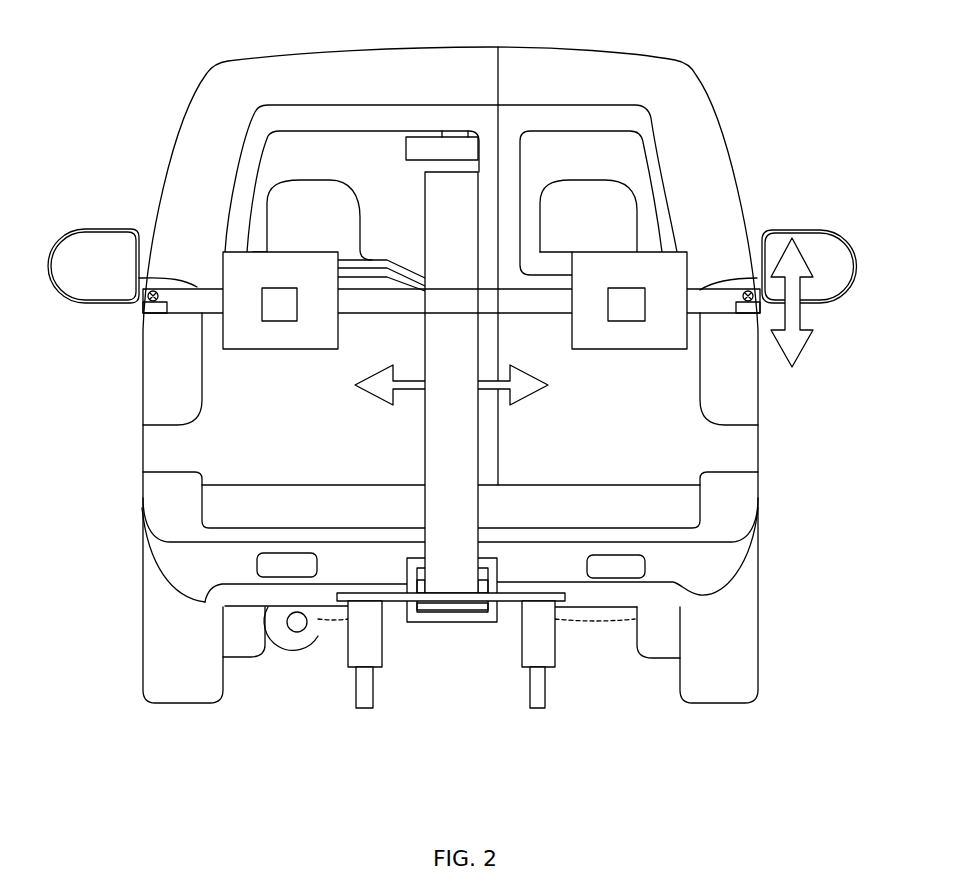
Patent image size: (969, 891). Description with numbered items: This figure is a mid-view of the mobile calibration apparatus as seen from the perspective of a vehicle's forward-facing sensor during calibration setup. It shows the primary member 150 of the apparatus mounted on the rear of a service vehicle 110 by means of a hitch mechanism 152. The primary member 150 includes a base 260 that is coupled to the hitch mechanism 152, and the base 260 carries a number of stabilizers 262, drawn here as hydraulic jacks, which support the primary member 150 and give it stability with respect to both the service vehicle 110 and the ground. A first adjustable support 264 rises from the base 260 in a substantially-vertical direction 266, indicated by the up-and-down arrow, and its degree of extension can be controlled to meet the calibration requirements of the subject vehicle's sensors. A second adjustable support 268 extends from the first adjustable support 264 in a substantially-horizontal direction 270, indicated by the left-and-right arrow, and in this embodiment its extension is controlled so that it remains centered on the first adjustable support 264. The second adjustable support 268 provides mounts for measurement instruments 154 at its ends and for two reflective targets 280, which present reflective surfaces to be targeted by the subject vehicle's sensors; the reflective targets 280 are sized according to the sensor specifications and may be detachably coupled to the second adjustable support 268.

The service vehicle 110 is at (445, 58).
The primary member 150 is at (510, 477).
The hitch mechanism 152 is at (452, 615).
The measurement instruments 154 is at (163, 313).
The base 260 is at (373, 598).
The stabilizers 262 is at (537, 693).
The first adjustable support 264 is at (431, 465).
The substantially-vertical direction 266 is at (813, 338).
The second adjustable support 268 is at (533, 308).
The substantially-horizontal direction 270 is at (378, 395).
The reflective targets 280 is at (259, 284).